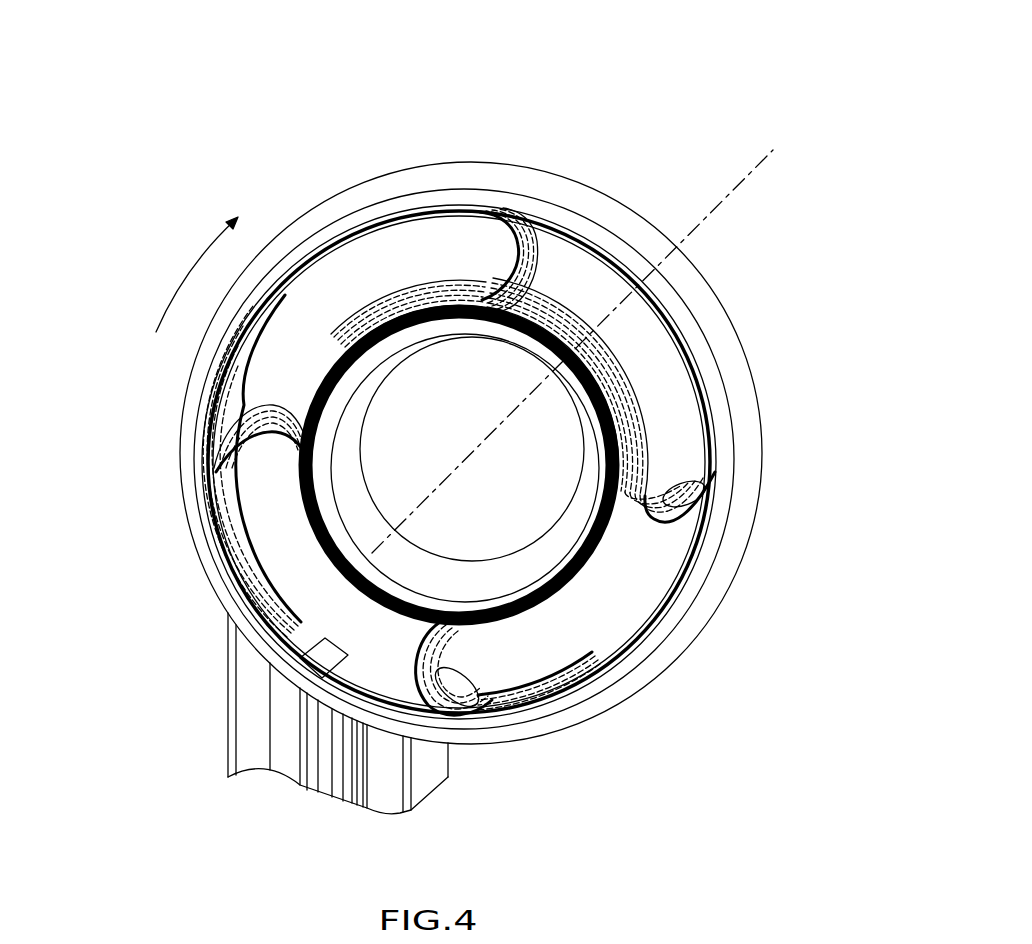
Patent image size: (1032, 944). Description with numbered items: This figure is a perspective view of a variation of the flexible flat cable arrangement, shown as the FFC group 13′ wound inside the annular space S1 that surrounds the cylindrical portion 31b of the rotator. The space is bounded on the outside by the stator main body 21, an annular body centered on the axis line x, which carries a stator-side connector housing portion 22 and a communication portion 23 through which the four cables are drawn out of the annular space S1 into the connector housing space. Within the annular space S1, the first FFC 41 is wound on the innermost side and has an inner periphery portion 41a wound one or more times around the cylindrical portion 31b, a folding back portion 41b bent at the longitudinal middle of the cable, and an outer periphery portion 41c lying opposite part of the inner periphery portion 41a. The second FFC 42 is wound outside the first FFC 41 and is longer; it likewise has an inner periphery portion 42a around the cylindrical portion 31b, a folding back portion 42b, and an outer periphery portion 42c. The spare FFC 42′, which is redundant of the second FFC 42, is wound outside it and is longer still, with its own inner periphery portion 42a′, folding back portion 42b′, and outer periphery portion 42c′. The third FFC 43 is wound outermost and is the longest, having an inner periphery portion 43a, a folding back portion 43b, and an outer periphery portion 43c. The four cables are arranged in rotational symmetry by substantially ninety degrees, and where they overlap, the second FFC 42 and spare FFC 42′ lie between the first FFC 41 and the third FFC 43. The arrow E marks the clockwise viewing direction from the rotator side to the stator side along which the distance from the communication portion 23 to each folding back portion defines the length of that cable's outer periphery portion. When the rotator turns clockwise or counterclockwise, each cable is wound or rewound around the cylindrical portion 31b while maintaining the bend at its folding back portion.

The FFC group 13′ is at (619, 264).
The stator main body 21 is at (310, 727).
The stator-side connector housing portion 22 is at (233, 688).
The communication portion 23 is at (291, 700).
The cylindrical portion 31b is at (430, 336).
The first FFC 41 is at (170, 466).
The inner periphery portion 41a is at (300, 492).
The folding back portion 41b is at (230, 405).
The outer periphery portion 41c is at (225, 532).
The second FFC 42 is at (497, 199).
The inner periphery portion 42a is at (445, 290).
The folding back portion 42b is at (540, 215).
The outer periphery portion 42c is at (412, 154).
The spare FFC 42′ is at (698, 401).
The inner periphery portion 42a′ is at (612, 358).
The folding back portion 42b′ is at (673, 480).
The outer periphery portion 42c′ is at (700, 408).
The third FFC 43 is at (590, 732).
The inner periphery portion 43a is at (550, 597).
The folding back portion 43b is at (492, 715).
The outer periphery portion 43c is at (570, 703).
The annular space S1 is at (623, 625).
The arrow E is at (185, 268).
The axis line x is at (498, 440).